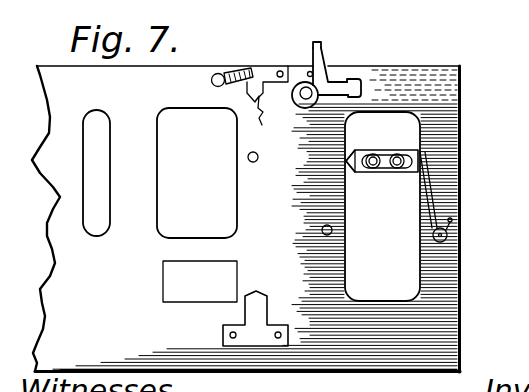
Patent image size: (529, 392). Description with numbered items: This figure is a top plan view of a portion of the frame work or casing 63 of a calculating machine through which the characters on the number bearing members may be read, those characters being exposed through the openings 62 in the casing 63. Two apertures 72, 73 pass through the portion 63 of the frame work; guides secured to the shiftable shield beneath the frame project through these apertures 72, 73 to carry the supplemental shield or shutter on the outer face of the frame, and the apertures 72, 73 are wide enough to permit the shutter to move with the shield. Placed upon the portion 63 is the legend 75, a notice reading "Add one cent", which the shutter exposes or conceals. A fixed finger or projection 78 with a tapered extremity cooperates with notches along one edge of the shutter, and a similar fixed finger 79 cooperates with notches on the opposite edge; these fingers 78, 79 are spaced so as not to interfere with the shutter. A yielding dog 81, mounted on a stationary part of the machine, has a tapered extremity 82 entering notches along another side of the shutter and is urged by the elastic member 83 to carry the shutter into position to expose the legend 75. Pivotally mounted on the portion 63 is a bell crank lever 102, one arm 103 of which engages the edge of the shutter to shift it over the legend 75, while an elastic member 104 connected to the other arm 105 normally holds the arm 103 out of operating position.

The openings 62 is at (93, 116).
The casing 63 is at (327, 356).
The aperture 72 is at (421, 263).
The aperture 73 is at (163, 222).
The legend 75 is at (285, 173).
The fixed finger or projection 78 is at (262, 311).
The fixed projection or finger 79 is at (259, 108).
The yielding dog 81 is at (388, 150).
The tapered extremity 82 is at (349, 165).
The elastic member 83 is at (428, 172).
The bell crank lever 102 is at (298, 68).
The arm 103 is at (356, 79).
The elastic member 104 is at (244, 70).
The arm 105 is at (333, 28).